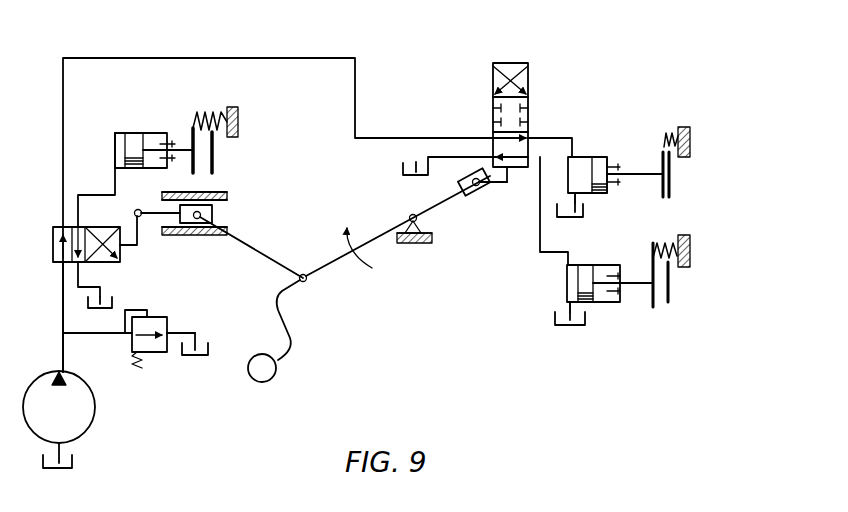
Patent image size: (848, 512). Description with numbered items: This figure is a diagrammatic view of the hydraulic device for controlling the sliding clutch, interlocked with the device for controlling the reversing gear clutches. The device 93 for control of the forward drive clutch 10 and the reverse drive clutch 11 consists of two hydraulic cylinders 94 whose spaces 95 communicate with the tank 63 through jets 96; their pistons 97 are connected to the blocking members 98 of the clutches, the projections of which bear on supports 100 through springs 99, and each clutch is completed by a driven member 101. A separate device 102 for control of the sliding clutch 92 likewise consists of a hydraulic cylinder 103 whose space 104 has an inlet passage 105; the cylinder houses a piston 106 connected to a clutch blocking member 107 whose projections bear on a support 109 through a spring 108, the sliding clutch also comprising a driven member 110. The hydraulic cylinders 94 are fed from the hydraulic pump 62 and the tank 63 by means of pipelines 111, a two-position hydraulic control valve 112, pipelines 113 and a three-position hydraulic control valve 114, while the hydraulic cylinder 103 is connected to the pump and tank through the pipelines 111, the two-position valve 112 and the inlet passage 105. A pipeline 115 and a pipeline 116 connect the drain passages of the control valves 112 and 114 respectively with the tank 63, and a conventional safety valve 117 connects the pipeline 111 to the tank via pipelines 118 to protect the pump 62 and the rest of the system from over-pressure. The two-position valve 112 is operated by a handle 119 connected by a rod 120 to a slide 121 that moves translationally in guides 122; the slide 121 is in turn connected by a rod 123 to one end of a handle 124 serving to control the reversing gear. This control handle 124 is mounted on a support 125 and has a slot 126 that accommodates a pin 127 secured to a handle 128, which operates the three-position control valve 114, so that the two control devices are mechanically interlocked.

The forward drive clutch 10 is at (676, 175).
The reverse drive clutch 11 is at (673, 281).
The hydraulic pump 62 is at (95, 424).
The tank 63 is at (85, 300).
The sliding clutch 92 is at (203, 127).
The device for control of the forward and reverse drive clutches 93 is at (580, 154).
The hydraulic cylinders 94 is at (633, 130).
The spaces 95 is at (584, 181).
The jets 96 is at (574, 217).
The pistons 97 is at (604, 193).
The blocking members 98 is at (662, 161).
The springs 99 is at (670, 133).
The supports 100 is at (684, 128).
The driven members 101 is at (673, 188).
The device for control of the sliding clutch 102 is at (182, 147).
The hydraulic cylinder 103 is at (147, 131).
The space 104 is at (118, 137).
The inlet passage 105 is at (115, 183).
The piston 106 is at (127, 152).
The clutch blocking member 107 is at (195, 128).
The spring 108 is at (208, 136).
The support 109 is at (240, 107).
The driven member 110 is at (215, 165).
The pipelines 111 is at (60, 307).
The two-position hydraulic control valve 112 is at (53, 240).
The pipelines 113 is at (73, 58).
The three-position hydraulic control valve 114 is at (528, 104).
The pipeline 115 is at (88, 278).
The pipeline 116 is at (426, 138).
The safety valve 117 is at (155, 354).
The pipelines 118 is at (93, 337).
The handle 119 is at (136, 210).
The rod 120 is at (157, 233).
The slide 121 is at (190, 225).
The guides 122 is at (205, 224).
The rod 123 is at (263, 253).
The handle 124 is at (262, 382).
The support 125 is at (410, 215).
The slot 126 is at (466, 194).
The pin 127 is at (480, 190).
The handle 128 is at (496, 184).